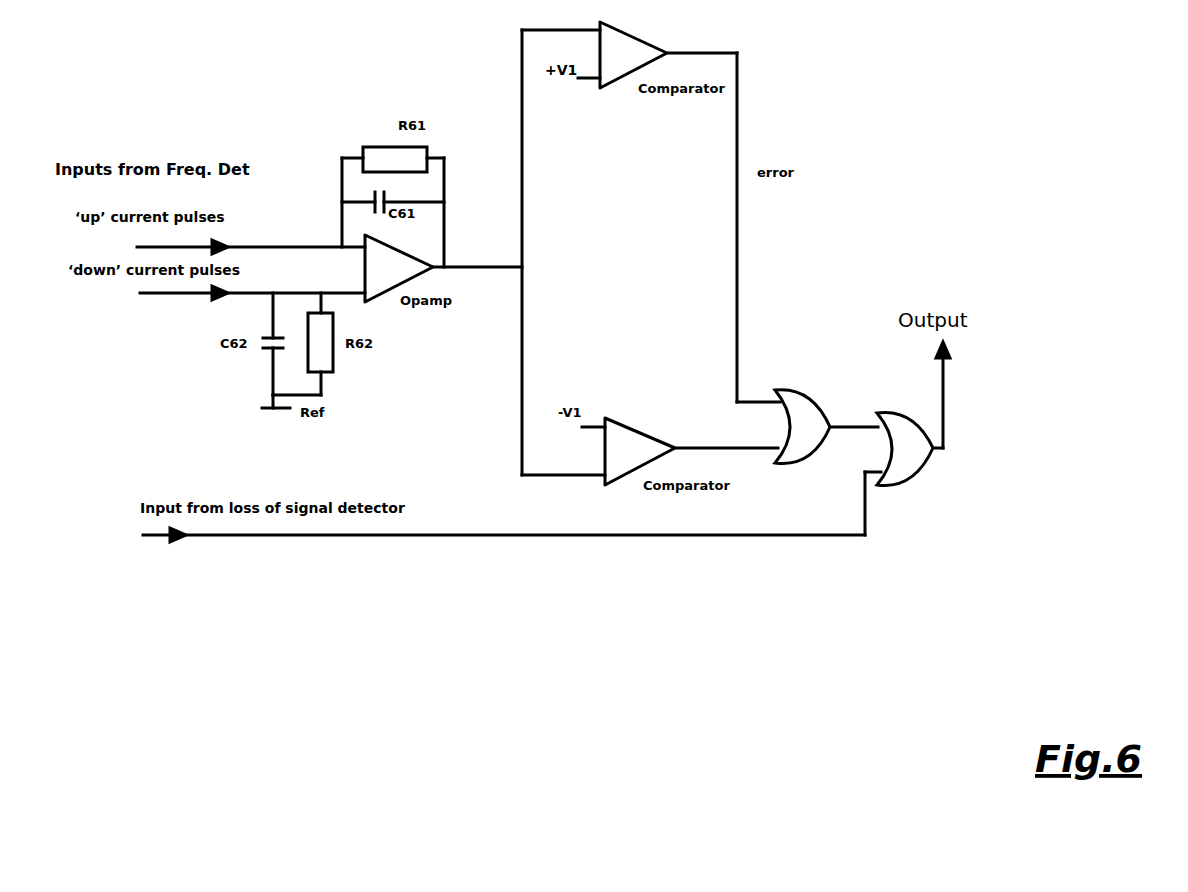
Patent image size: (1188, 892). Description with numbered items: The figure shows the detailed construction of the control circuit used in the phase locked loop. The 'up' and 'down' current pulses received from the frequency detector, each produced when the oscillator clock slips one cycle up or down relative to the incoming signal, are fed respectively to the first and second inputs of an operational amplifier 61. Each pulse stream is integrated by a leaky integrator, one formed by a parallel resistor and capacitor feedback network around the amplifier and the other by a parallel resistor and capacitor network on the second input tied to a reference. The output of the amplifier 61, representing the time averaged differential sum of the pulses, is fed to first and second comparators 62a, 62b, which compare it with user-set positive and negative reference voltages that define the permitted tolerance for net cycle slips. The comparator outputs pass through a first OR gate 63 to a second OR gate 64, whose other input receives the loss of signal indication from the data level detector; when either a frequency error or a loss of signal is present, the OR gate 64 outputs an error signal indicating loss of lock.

The operational amplifier 61 is at (375, 298).
The first comparator 62a is at (605, 85).
The second comparator 62b is at (628, 427).
The first OR gate 63 is at (788, 390).
The second OR gate 64 is at (920, 473).